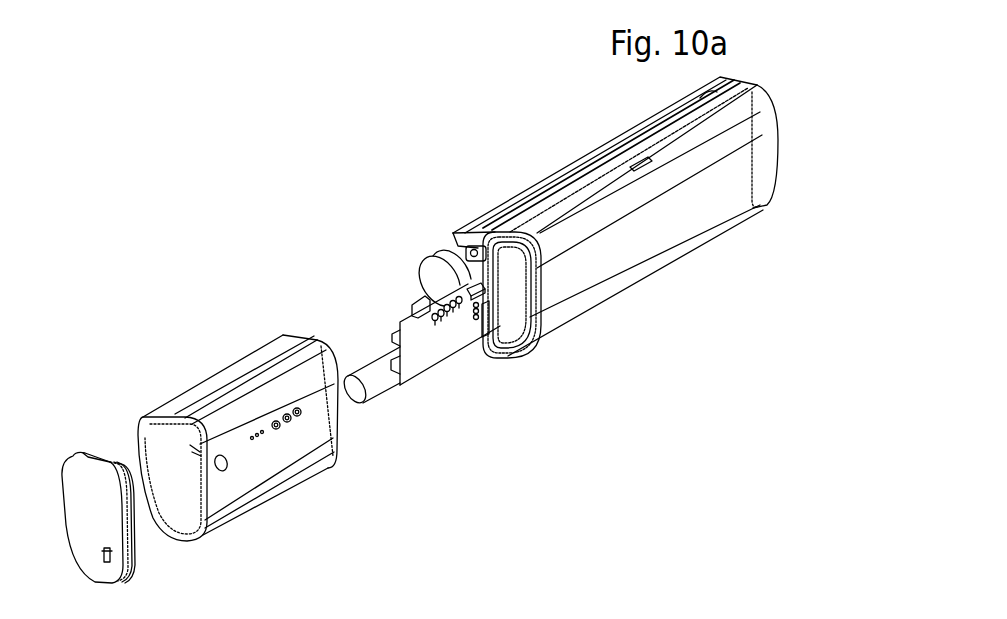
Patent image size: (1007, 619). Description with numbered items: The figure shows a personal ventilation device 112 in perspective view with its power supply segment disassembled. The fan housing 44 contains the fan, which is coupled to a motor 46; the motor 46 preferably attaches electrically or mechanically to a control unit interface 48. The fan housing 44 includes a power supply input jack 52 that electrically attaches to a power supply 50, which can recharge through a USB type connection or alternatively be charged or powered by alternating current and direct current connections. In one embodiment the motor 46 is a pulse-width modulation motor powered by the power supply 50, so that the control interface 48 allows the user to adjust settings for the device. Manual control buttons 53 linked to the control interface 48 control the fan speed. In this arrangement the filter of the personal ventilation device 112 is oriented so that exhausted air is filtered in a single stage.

The fan housing 44 is at (212, 385).
The motor 46 is at (437, 265).
The control unit interface 48 is at (475, 325).
The power supply 50 is at (374, 400).
The power supply input jack 52 is at (108, 555).
The manual control buttons 53 is at (483, 293).
The personal ventilation device 112 is at (337, 182).